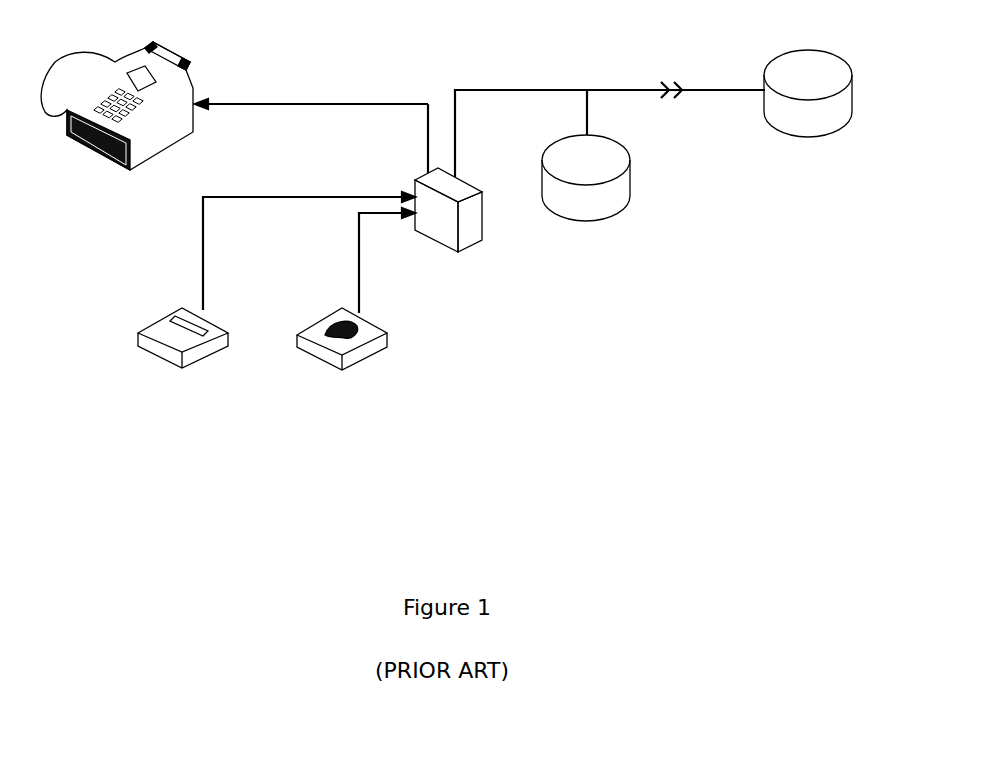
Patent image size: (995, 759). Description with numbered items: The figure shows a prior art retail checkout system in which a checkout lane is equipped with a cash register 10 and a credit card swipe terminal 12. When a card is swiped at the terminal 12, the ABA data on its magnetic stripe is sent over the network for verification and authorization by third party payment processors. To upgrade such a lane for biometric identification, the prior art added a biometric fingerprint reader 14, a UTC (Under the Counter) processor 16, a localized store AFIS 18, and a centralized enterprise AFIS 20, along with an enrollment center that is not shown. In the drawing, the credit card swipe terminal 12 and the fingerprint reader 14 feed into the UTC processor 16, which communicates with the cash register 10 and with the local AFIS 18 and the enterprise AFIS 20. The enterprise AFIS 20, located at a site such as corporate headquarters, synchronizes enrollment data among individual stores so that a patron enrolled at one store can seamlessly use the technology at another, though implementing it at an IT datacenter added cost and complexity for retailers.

The cash register 10 is at (192, 94).
The credit card swipe terminal 12 is at (217, 322).
The biometric fingerprint reader 14 is at (380, 322).
The UTC (Under the Counter) processor 16 is at (482, 232).
The localized AFIS 18 is at (629, 183).
The centralized enterprise AFIS 20 is at (788, 50).